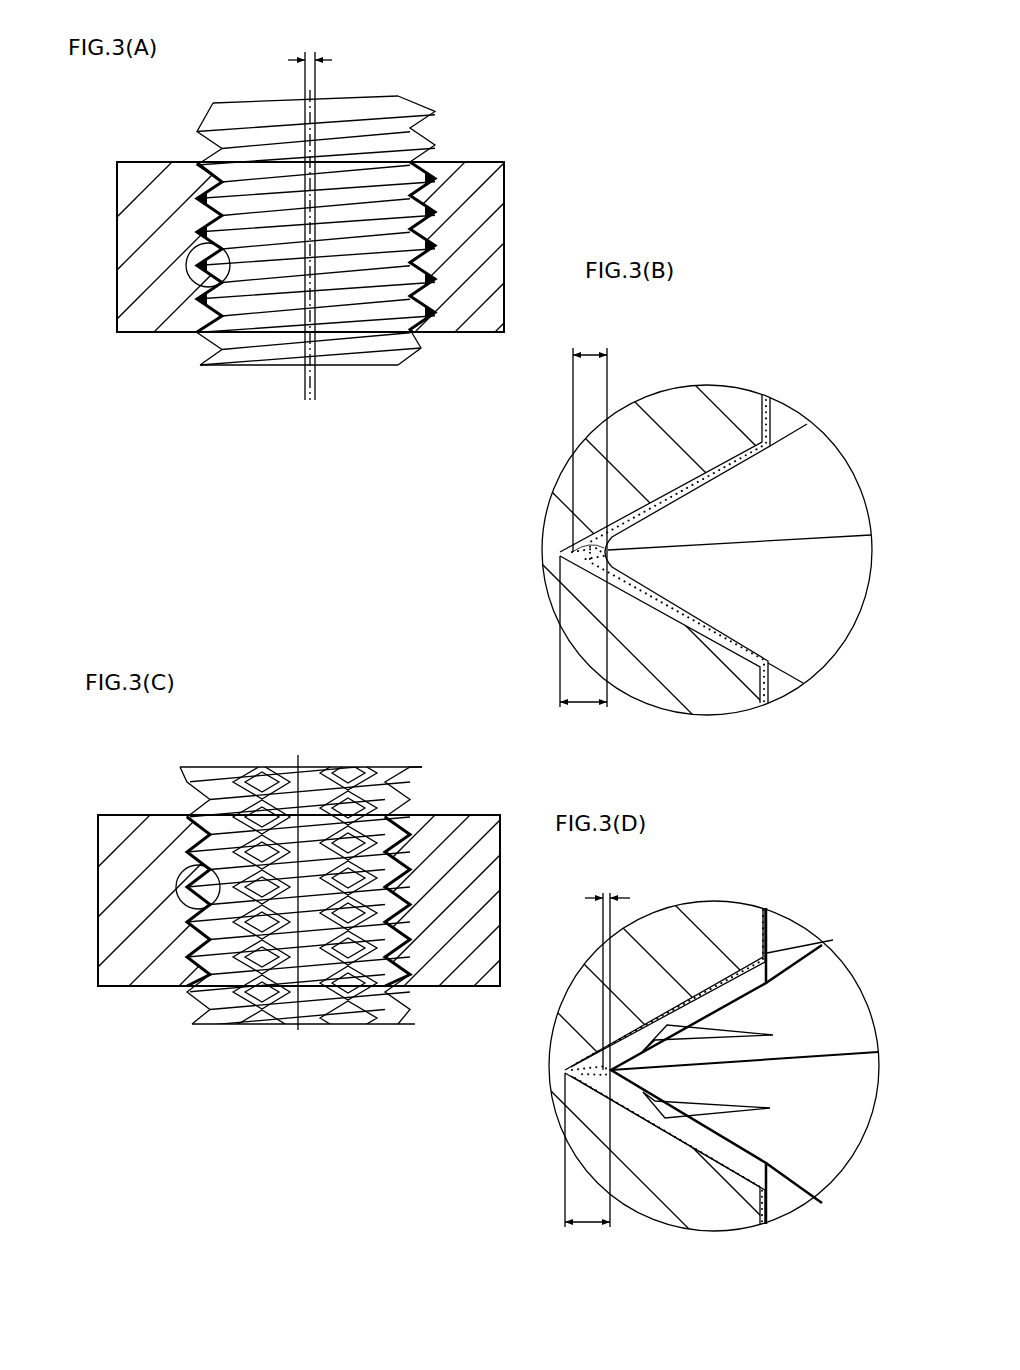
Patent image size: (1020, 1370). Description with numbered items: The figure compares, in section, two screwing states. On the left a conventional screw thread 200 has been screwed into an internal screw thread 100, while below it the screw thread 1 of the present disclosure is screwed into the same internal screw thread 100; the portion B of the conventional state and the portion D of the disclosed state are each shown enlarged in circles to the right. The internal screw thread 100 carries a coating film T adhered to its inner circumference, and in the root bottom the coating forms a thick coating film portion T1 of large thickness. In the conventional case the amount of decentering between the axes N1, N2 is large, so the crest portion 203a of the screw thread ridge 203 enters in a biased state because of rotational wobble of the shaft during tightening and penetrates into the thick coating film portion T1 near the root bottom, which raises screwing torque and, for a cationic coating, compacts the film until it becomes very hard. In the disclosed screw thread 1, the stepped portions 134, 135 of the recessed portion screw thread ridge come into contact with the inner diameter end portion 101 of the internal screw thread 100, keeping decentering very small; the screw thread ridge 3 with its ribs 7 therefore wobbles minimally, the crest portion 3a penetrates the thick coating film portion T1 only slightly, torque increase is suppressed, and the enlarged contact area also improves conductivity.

In FIG. 3C, the screw thread 1 is at (318, 875).
In FIG. 3C, the screw thread ridge 3 is at (223, 873).
In FIG. 3D, the screw thread ridge 3 is at (683, 1086).
In FIG. 3D, the crest portion 3a is at (565, 1072).
In FIG. 3C, the rib / protrusion on thread flank 7 is at (263, 873).
In FIG. 3D, the rib / protrusion on thread flank 7 is at (707, 1071).
In FIG. 3A, the internal screw thread 100 is at (156, 162).
In FIG. 3B, the internal screw thread 100 is at (705, 405).
In FIG. 3C, the internal screw thread 100 is at (120, 815).
In FIG. 3D, the internal screw thread 100 is at (650, 1000).
In FIG. 3D, the inner diameter end portion 101 is at (770, 933).
In FIG. 3D, the stepped portion 134 is at (758, 1190).
In FIG. 3D, the stepped portion 135 is at (757, 957).
In FIG. 3A, the conventional screw thread 200 is at (339, 255).
In FIG. 3A, the screw thread ridge 203 is at (248, 267).
In FIG. 3B, the screw thread ridge 203 is at (725, 607).
In FIG. 3B, the crest portion 203a is at (558, 557).
In FIG. 3A, the coating film T is at (188, 265).
In FIG. 3B, the coating film T is at (690, 627).
In FIG. 3D, the coating film T is at (688, 1147).
In FIG. 3A, the portion B is at (195, 277).
In FIG. 3C, the portion D is at (178, 900).
In FIG. 3A, the axis of bolt N1 is at (305, 92).
In FIG. 3C, the axis of bolt N1 is at (300, 760).
In FIG. 3A, the axis of mating member N2 is at (316, 92).
In FIG. 3B, the thick coating film portion T1 is at (583, 645).
In FIG. 3D, the thick coating film portion T1 is at (587, 1168).